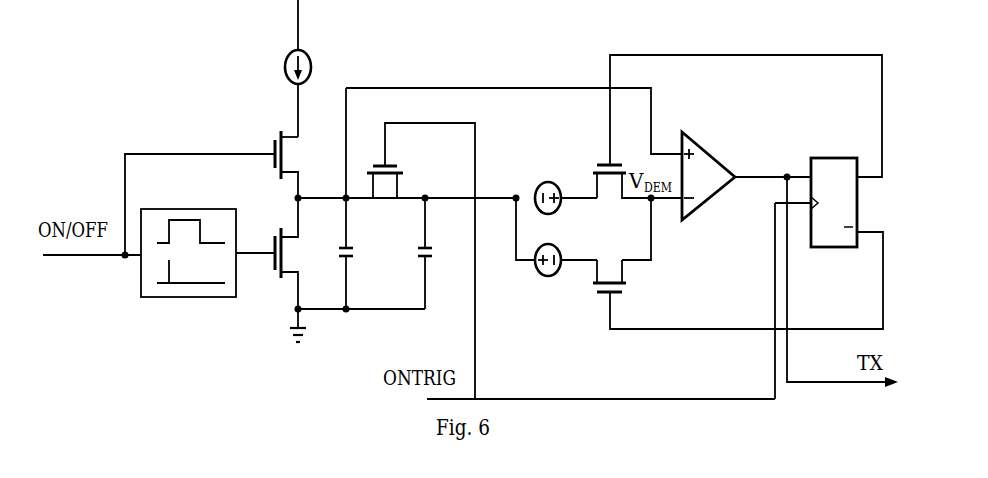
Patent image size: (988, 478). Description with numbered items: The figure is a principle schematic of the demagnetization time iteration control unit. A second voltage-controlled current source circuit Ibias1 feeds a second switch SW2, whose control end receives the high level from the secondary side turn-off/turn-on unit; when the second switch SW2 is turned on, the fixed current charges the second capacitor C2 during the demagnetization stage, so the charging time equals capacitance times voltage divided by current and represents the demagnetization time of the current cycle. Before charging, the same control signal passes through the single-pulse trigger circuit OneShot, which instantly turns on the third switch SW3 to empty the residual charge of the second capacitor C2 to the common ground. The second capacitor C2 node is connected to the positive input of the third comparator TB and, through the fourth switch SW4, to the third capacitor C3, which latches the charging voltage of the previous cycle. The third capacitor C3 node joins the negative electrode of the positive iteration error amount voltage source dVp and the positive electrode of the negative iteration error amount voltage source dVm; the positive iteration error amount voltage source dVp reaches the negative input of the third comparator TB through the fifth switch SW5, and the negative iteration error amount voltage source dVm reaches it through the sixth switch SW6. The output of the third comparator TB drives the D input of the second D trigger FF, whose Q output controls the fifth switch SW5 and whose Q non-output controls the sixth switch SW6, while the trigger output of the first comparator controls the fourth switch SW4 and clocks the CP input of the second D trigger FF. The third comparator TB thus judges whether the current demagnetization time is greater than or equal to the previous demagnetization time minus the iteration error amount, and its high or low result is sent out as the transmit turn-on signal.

The second voltage-controlled current source circuit Ibias1 is at (317, 68).
The second switch SW2 is at (230, 193).
The third switch SW3 is at (286, 253).
The fourth switch SW4 is at (421, 261).
The fifth switch SW5 is at (737, 126).
The sixth switch SW6 is at (738, 280).
The second capacitor C2 is at (359, 198).
The third capacitor C3 is at (412, 253).
The single-pulse trigger circuit OneShot is at (188, 270).
The positive iteration error amount voltage source dVp is at (558, 186).
The negative iteration error amount voltage source dVm is at (556, 256).
The third comparator TB is at (709, 174).
The second D trigger FF is at (816, 278).